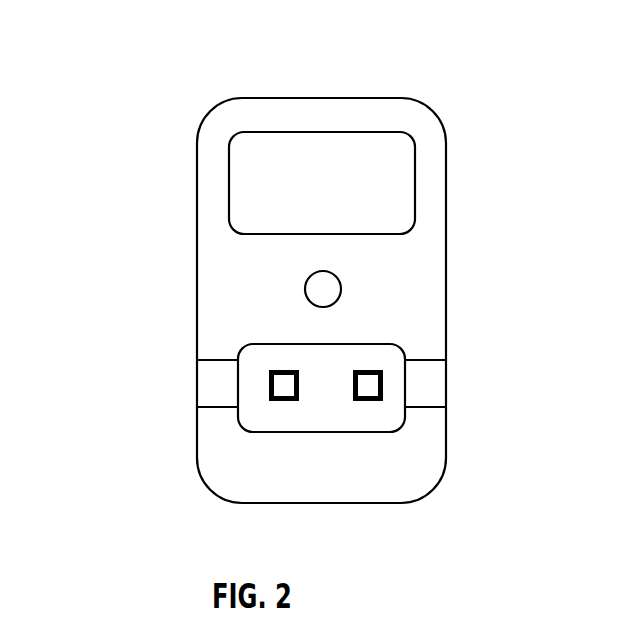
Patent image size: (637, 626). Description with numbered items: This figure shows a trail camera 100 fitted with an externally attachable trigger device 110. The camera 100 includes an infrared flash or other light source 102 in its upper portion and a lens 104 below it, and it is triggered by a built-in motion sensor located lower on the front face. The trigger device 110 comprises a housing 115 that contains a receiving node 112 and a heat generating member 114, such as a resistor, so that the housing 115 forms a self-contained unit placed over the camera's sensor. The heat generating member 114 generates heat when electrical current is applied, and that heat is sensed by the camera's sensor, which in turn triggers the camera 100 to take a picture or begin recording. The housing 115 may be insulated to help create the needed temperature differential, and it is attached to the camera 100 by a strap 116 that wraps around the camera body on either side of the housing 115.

The trigger device 110 is at (112, 42).
The camera 100 is at (433, 115).
The light source 102 is at (403, 177).
The lens 104 is at (337, 273).
The receiving node 112 is at (282, 370).
The heat generating member 114 is at (367, 370).
The housing 115 is at (298, 432).
The strap 116 is at (458, 383).